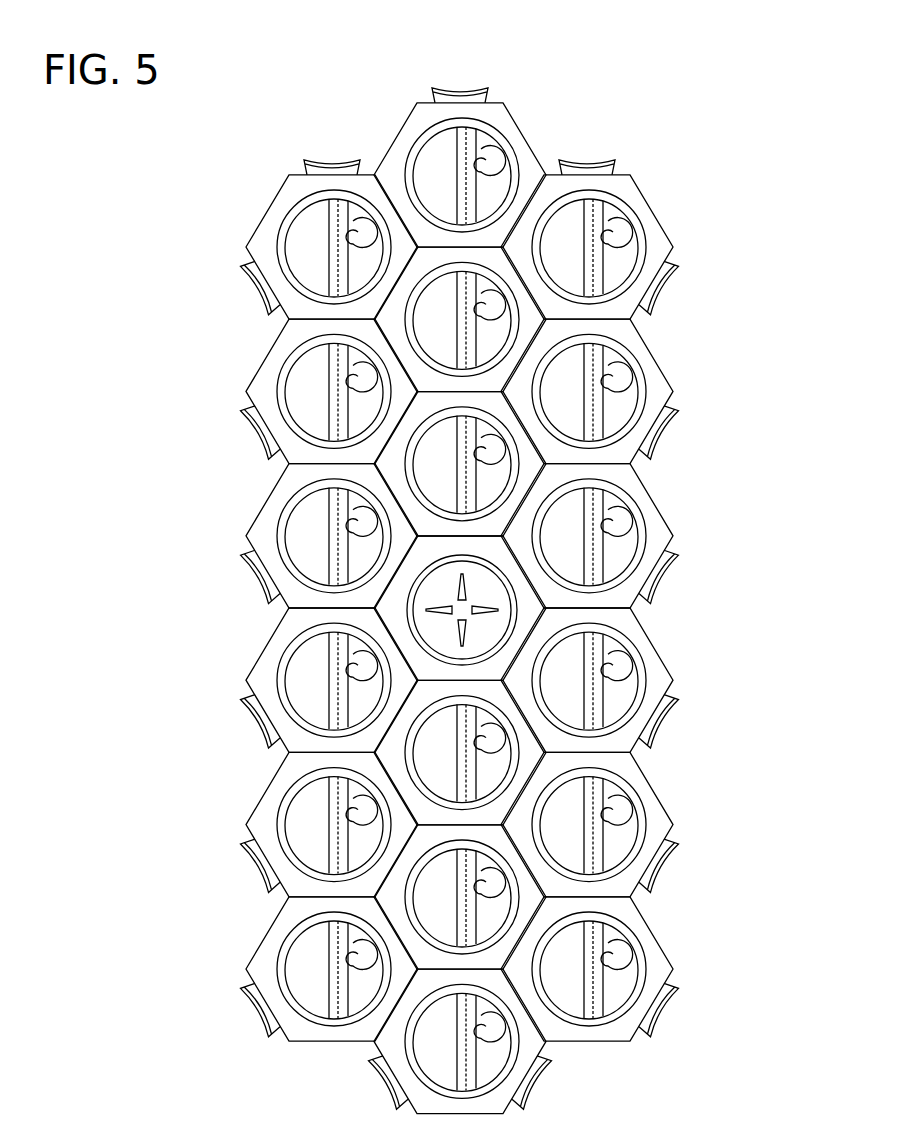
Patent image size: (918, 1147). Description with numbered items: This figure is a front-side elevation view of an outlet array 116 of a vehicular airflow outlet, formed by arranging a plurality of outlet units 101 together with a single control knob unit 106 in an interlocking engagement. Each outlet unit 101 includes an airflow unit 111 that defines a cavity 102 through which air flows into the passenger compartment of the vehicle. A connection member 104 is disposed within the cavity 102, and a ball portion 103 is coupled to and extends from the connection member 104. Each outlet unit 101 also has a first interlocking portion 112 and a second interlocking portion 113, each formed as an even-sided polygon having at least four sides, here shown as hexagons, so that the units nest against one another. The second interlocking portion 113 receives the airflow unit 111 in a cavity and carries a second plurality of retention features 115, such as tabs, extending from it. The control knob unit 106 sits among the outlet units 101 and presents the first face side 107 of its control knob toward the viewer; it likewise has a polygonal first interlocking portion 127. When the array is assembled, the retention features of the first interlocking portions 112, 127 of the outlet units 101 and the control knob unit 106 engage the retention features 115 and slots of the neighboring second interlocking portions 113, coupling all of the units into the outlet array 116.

The outlet unit 101 is at (668, 375).
The cavity 102 is at (485, 196).
The ball portion 103 is at (505, 158).
The connection member 104 is at (457, 135).
The control knob unit 106 is at (497, 551).
The first face side 107 is at (490, 630).
The airflow unit 111 is at (425, 135).
The first interlocking portion 112 is at (625, 188).
The second interlocking portion 113 is at (662, 287).
The second plurality of retention features 115 is at (602, 158).
The outlet array 116 is at (633, 92).
The first interlocking portion 127 is at (413, 650).